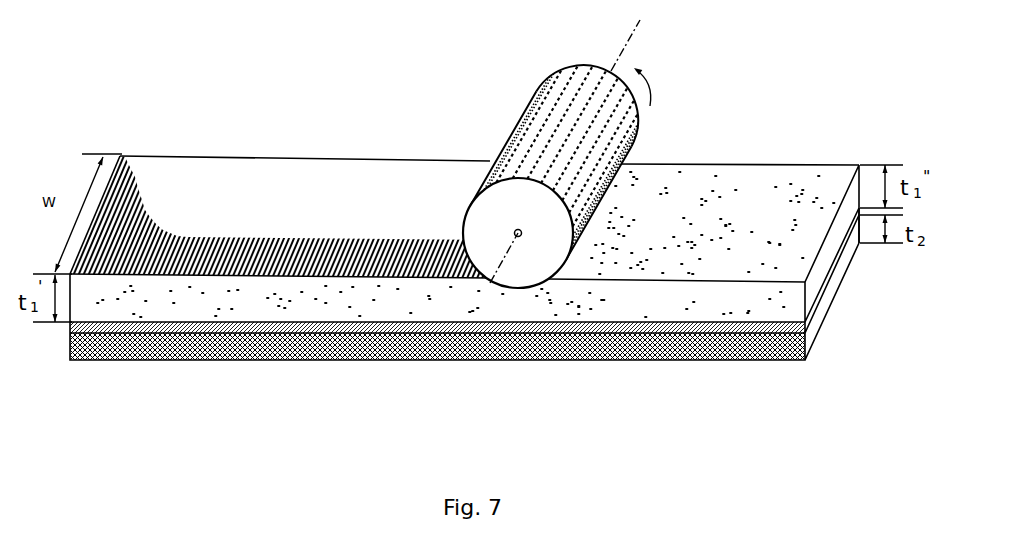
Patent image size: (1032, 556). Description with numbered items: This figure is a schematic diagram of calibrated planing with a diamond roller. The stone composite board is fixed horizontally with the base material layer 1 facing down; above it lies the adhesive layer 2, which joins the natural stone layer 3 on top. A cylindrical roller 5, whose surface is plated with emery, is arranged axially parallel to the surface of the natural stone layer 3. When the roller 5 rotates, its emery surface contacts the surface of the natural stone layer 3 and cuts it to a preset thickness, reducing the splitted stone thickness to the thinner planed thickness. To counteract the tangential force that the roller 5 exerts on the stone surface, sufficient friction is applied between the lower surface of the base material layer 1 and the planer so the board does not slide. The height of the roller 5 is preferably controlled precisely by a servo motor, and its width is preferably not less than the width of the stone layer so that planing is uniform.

The base material layer 1 is at (525, 348).
The adhesive layer 2 is at (572, 328).
The natural stone layer 3 is at (633, 310).
The roller for calibrated planing with diamond roller 5 is at (535, 90).